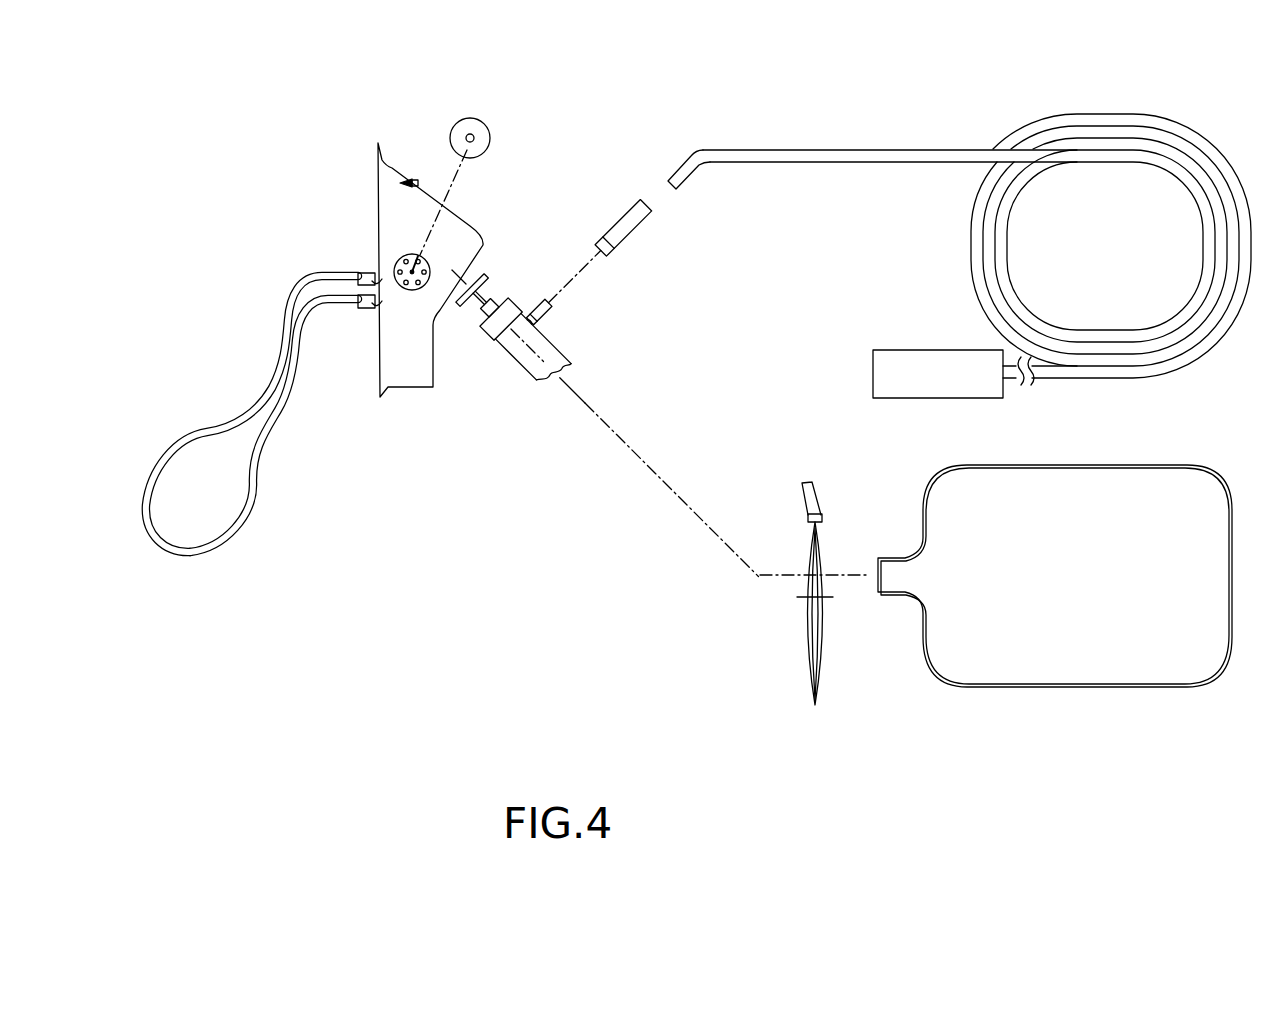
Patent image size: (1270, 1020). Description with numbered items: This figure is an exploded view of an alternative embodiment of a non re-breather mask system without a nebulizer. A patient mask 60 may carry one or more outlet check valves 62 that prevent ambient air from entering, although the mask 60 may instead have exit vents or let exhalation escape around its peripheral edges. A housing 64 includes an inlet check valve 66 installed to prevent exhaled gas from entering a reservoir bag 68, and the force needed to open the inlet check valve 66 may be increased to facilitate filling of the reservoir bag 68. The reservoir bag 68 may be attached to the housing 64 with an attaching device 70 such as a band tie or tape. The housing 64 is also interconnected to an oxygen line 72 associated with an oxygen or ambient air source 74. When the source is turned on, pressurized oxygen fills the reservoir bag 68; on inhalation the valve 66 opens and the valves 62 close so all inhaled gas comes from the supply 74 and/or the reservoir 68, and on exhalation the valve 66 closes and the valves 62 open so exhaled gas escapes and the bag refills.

The patient mask 60 is at (378, 210).
The outlet check valve 62 is at (490, 129).
The housing 64 is at (560, 357).
The inlet check valve 66 is at (482, 279).
The reservoir bag 68 is at (1061, 588).
The attaching device 70 is at (815, 706).
The oxygen line 72 is at (809, 151).
The oxygen or ambient air source 74 is at (922, 350).